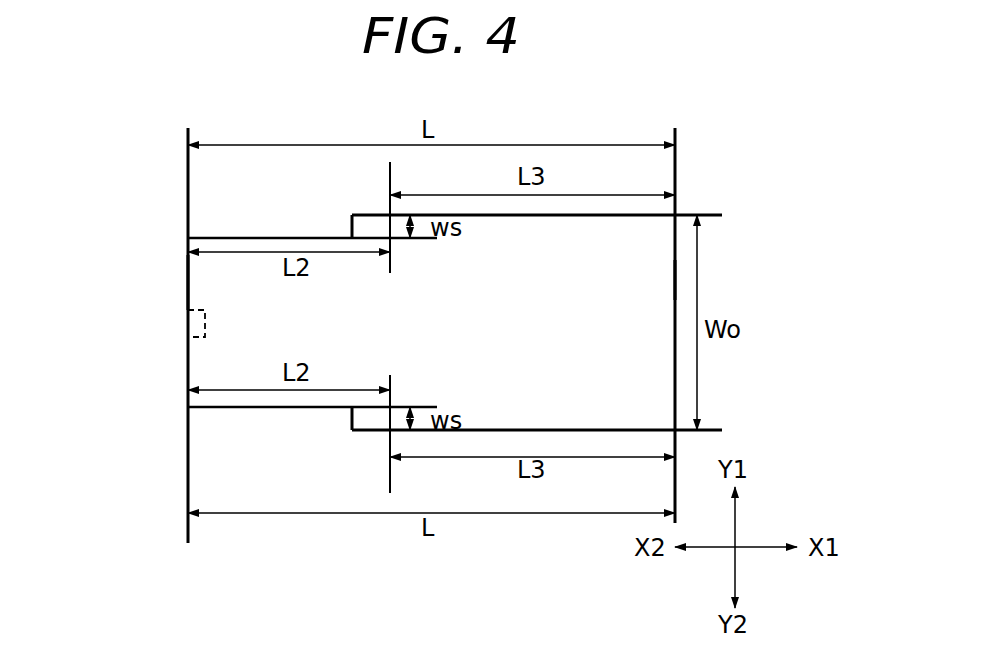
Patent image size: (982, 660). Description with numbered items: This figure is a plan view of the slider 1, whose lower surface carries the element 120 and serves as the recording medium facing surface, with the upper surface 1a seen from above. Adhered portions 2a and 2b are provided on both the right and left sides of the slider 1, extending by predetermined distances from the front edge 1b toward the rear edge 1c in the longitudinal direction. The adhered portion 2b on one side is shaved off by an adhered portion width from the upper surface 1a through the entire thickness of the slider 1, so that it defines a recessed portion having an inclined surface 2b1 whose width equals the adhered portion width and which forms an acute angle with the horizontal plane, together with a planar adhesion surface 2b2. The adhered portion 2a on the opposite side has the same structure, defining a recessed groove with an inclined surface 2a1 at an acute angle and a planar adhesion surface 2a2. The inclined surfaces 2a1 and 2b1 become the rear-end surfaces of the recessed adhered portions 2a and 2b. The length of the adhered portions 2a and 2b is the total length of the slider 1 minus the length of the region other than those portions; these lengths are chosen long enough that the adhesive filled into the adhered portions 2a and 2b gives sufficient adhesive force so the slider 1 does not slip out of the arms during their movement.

The slider 1 is at (132, 165).
The upper surface 1a is at (198, 297).
The front edge 1b is at (188, 277).
The rear edge 1c is at (675, 279).
The adhered portion 2a is at (312, 194).
The inclined surface 2a1 is at (370, 222).
The planar adhesion surface 2a2 is at (248, 238).
The adhered portion 2b is at (312, 459).
The inclined surface 2b1 is at (370, 418).
The planar adhesion surface 2b2 is at (235, 410).
The element 120 is at (190, 330).